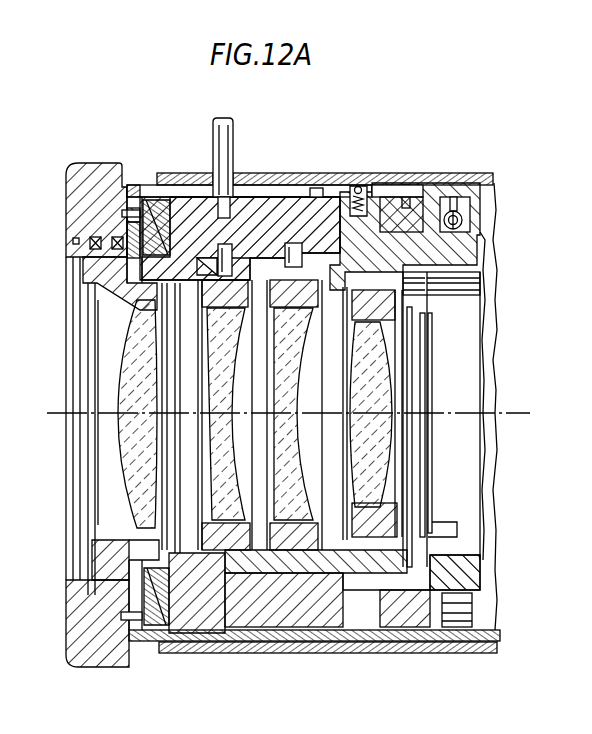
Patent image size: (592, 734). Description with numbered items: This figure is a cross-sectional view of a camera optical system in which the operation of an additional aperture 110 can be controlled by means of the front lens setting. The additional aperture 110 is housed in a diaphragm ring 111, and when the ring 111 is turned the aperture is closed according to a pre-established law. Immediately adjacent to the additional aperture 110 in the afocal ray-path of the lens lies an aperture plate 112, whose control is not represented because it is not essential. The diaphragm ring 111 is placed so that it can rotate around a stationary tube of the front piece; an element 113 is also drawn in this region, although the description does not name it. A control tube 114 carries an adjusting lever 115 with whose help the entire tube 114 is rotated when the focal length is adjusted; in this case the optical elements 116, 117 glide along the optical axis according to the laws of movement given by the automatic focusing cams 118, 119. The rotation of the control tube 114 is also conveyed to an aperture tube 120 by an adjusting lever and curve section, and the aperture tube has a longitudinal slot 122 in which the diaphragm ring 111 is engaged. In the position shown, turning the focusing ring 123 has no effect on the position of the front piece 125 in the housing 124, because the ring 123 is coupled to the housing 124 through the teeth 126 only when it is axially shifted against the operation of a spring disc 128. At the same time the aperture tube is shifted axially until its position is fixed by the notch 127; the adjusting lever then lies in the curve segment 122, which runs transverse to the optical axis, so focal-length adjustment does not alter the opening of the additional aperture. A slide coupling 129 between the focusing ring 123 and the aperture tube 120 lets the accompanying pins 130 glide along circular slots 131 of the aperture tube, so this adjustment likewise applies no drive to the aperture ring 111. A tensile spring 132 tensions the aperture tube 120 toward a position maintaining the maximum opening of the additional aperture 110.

The additional aperture 110 is at (430, 562).
The diaphragm ring 111 is at (430, 608).
The aperture plate 112 is at (423, 463).
The rear cover plate 113 is at (363, 610).
The control tube 114 is at (273, 213).
The adjusting lever 115 is at (229, 135).
The optical element 116 is at (227, 523).
The optical element 117 is at (298, 510).
The automatic focusing cam 118 is at (223, 243).
The automatic focusing cam 119 is at (300, 237).
The aperture tube 120 is at (168, 187).
The longitudinal slot 122 is at (383, 186).
The focusing ring 123 is at (88, 172).
The housing 124 is at (98, 273).
The front piece 125 is at (133, 377).
The teeth 126 is at (86, 245).
The notch 127 is at (311, 188).
The spring disc 128 is at (148, 198).
The slide coupling 129 is at (123, 193).
The pin 130 is at (126, 620).
The circular slot 131 is at (137, 637).
The tensile spring 132 is at (462, 220).